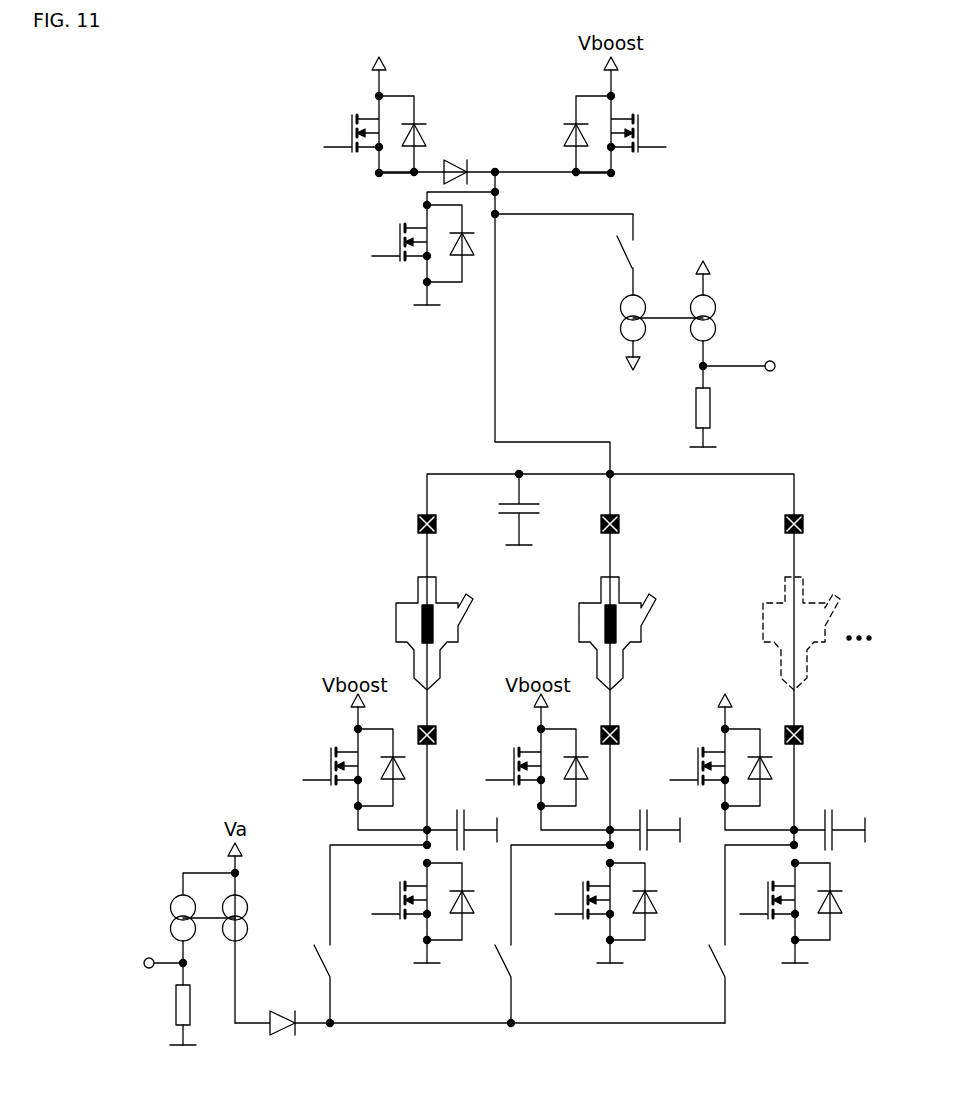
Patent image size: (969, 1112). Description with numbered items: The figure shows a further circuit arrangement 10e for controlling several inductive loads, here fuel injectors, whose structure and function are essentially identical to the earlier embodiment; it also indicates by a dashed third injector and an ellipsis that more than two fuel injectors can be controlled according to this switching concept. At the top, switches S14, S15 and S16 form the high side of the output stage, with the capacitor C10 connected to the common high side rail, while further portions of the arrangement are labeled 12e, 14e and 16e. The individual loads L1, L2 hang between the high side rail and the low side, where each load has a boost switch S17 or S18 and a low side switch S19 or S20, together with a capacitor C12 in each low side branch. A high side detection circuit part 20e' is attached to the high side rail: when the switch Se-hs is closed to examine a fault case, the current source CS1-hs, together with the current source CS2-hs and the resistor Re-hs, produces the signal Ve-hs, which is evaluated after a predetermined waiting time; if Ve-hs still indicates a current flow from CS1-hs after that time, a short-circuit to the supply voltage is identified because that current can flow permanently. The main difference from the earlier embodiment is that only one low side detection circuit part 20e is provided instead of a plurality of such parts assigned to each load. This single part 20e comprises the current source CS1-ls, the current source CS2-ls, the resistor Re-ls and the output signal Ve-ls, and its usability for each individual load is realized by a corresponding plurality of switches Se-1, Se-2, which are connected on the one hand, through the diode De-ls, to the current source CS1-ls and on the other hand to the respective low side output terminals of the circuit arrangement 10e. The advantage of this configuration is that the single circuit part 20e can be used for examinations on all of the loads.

The circuit arrangement 10e is at (700, 80).
The supply node / battery connection 12e is at (378, 82).
The ground connection 14e is at (424, 952).
The injector connector terminal 16e is at (418, 526).
The low side detection circuit part 20e is at (209, 805).
The high side current sensing circuit 20e' is at (710, 233).
The battery high side switch S14 is at (355, 135).
The boost high side switch S15 is at (636, 135).
The freewheeling switch S16 is at (404, 244).
The boost switch for first injector S17 is at (334, 771).
The boost switch for second injector S18 is at (518, 771).
The low side switch for first injector S19 is at (404, 906).
The low side switch for second injector S20 is at (587, 906).
The load L1 is at (460, 633).
The load L2 is at (643, 633).
The high side capacitor C10 is at (520, 512).
The low side capacitor C12 is at (646, 810).
The switch Se-hs is at (618, 252).
The current source CS1-hs is at (620, 318).
The second high side current source CS2-hs is at (716, 312).
The signal Ve-hs is at (750, 353).
The high side sense resistor Re-hs is at (710, 414).
The switch Se-1 is at (322, 960).
The switch Se-2 is at (512, 960).
The low side diode De-ls is at (288, 1037).
The current source CS1-ls is at (280, 886).
The second low side current source CS2-ls is at (170, 912).
The low side sense voltage output Ve-ls is at (137, 964).
The low side sense resistor Re-ls is at (175, 1006).